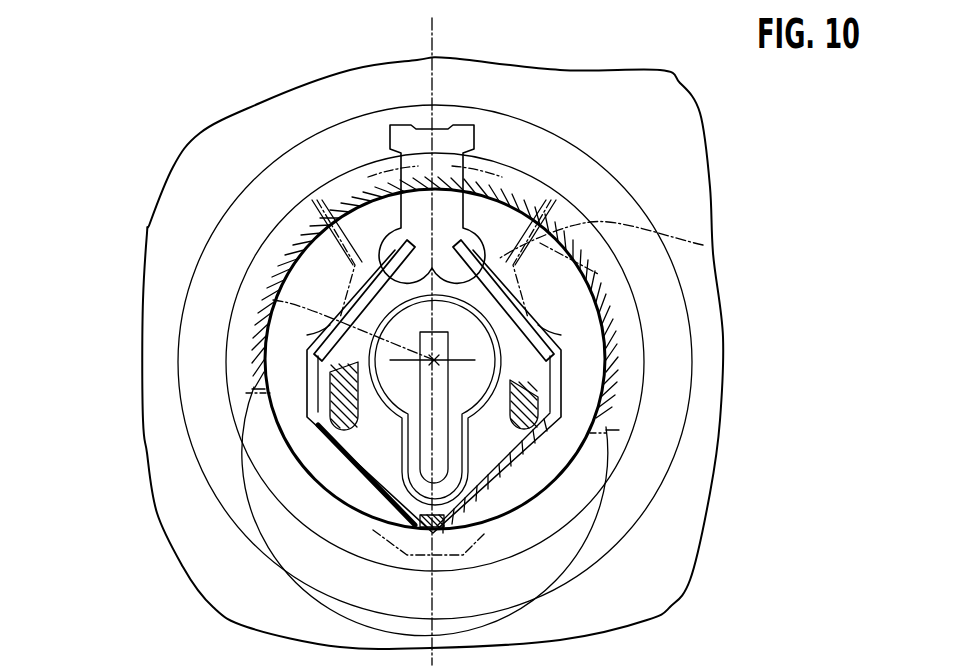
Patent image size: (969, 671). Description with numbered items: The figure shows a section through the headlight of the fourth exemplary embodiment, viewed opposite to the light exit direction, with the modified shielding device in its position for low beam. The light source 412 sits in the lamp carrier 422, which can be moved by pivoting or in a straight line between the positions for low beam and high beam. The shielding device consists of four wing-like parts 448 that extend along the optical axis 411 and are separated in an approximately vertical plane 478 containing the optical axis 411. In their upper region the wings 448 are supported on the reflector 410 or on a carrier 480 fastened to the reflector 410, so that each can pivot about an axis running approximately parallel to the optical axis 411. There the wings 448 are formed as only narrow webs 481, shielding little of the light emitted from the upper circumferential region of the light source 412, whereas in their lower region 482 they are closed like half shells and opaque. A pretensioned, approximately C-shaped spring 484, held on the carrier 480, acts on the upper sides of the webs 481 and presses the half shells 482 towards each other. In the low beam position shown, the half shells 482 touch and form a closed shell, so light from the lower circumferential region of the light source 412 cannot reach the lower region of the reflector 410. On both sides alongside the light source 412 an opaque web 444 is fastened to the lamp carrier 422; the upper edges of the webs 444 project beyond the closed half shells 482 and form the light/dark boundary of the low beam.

The reflector 410 is at (702, 149).
The optical axis 411 is at (273, 300).
The light source 412 is at (333, 232).
The lamp carrier 422 is at (625, 320).
The opaque web 444 is at (340, 425).
The wing-like parts 448 is at (291, 409).
The vertical plane 478 is at (432, 42).
The carrier 480 is at (472, 142).
The narrow webs 481 is at (407, 318).
The lower region (half shells) 482 is at (355, 452).
The C-shaped spring 484 is at (703, 245).